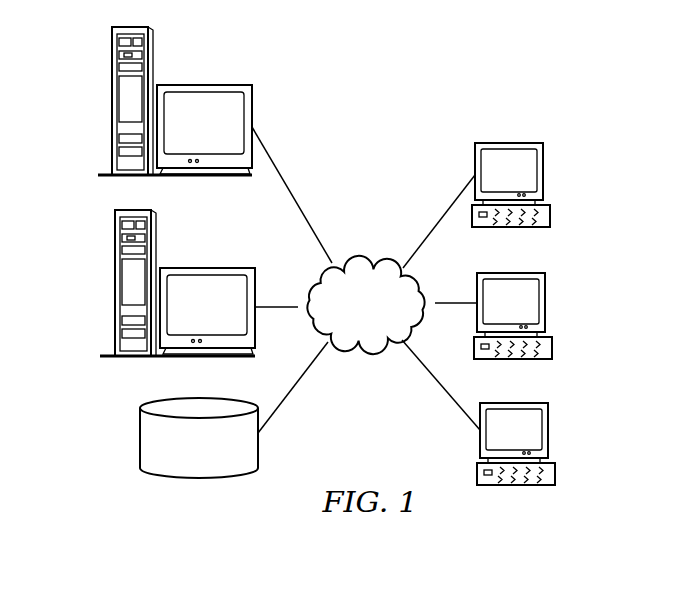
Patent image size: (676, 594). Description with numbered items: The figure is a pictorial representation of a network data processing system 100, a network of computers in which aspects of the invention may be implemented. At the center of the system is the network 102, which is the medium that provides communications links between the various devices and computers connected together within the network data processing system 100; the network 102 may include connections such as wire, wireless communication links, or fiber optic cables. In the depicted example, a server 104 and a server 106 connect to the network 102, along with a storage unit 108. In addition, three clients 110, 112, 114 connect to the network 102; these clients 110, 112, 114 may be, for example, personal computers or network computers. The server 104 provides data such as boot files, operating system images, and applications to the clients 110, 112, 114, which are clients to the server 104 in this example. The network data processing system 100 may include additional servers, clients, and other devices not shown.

The network data processing system 100 is at (421, 133).
The network 102 is at (365, 258).
The server 104 is at (112, 103).
The server 106 is at (115, 286).
The storage unit 108 is at (140, 438).
The client 110 is at (543, 170).
The client 112 is at (545, 302).
The client 114 is at (548, 430).